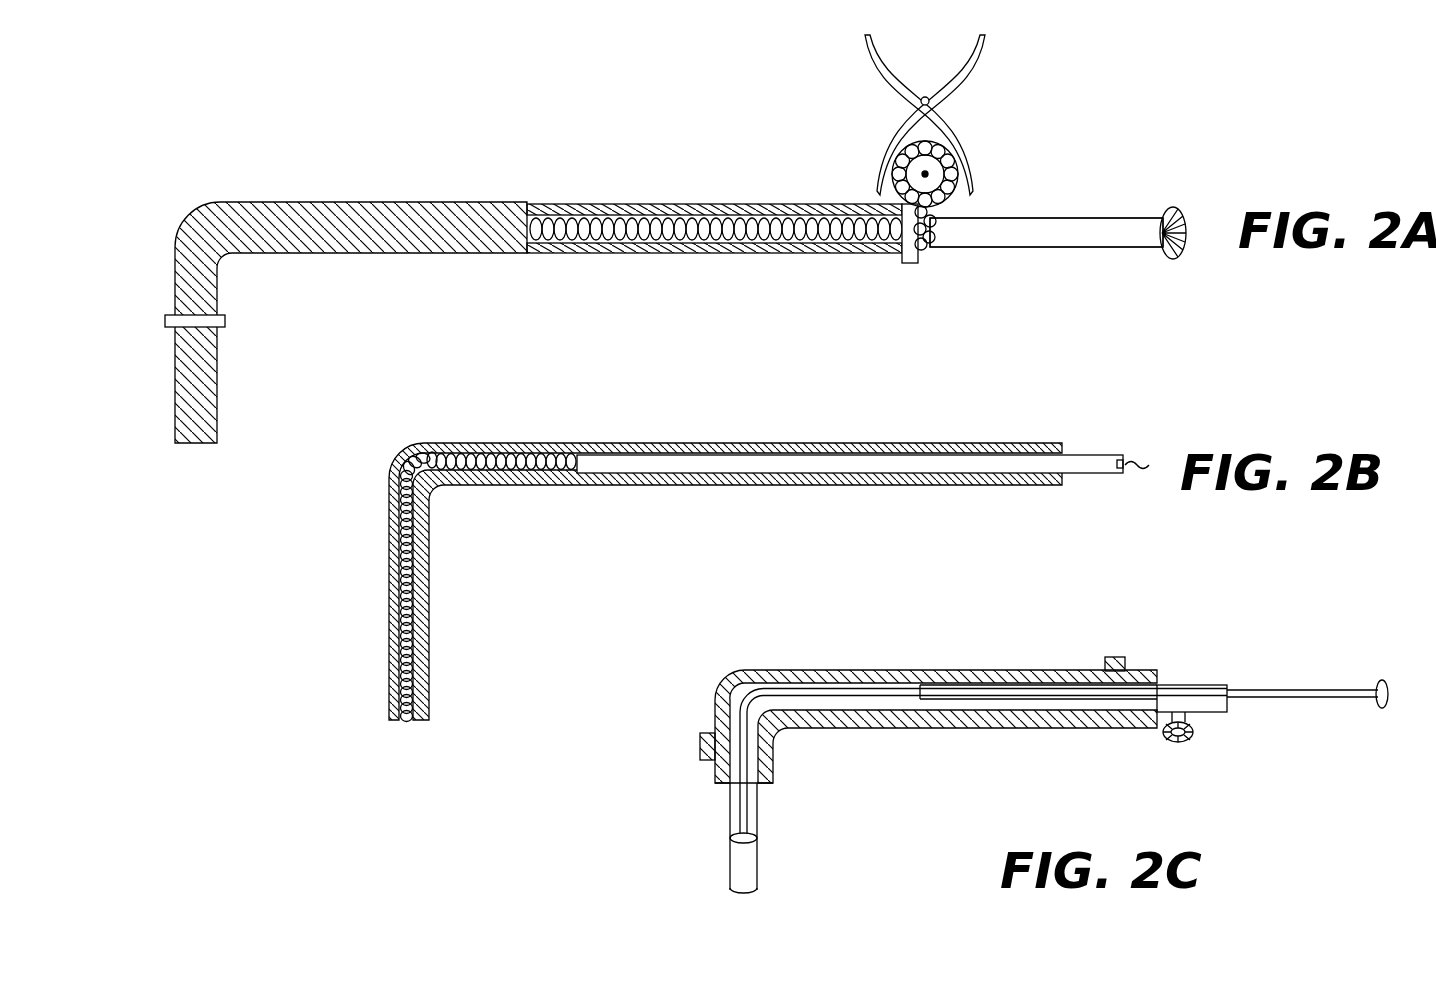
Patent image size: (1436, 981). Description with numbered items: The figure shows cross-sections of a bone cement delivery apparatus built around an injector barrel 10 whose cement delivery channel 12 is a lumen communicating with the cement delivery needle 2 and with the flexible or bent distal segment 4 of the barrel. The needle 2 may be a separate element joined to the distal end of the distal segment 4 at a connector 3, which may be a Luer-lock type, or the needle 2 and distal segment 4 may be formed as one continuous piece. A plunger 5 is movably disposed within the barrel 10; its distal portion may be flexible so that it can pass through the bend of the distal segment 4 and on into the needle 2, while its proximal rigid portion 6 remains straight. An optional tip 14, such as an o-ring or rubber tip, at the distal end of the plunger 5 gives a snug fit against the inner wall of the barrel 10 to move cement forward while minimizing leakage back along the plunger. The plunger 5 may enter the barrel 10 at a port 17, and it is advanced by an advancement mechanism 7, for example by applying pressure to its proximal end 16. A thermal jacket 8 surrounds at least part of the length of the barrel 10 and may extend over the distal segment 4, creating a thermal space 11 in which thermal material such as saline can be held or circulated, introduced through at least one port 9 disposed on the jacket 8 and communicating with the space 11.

In FIG. 2B, the cement delivery needle 2 is at (433, 688).
In FIG. 2A, the connector 3 is at (222, 330).
In FIG. 2A, the distal segment 4 is at (182, 218).
In FIG. 2B, the distal segment 4 is at (435, 500).
In FIG. 2A, the plunger 5 is at (950, 207).
In FIG. 2B, the plunger 5 is at (545, 478).
In FIG. 2C, the plunger 5 is at (777, 690).
In FIG. 2C, the proximal rigid portion 6 is at (920, 685).
In FIG. 2A, the advancement mechanism 7 is at (955, 82).
In FIG. 2A, the thermal jacket 8 is at (743, 204).
In FIG. 2C, the thermal jacket 8 is at (988, 670).
In FIG. 2C, the port 9 is at (1125, 662).
In FIG. 2A, the injector barrel 10 is at (1075, 218).
In FIG. 2B, the injector barrel 10 is at (1090, 485).
In FIG. 2C, the injector barrel 10 is at (1210, 712).
In FIG. 2C, the thermal space 11 is at (970, 728).
In FIG. 2A, the cement delivery channel 12 is at (1028, 235).
In FIG. 2C, the tip 14 is at (757, 838).
In FIG. 2C, the proximal end 16 is at (1345, 697).
In FIG. 2A, the port 17 is at (1175, 208).
In FIG. 2C, the port 17 is at (1190, 742).